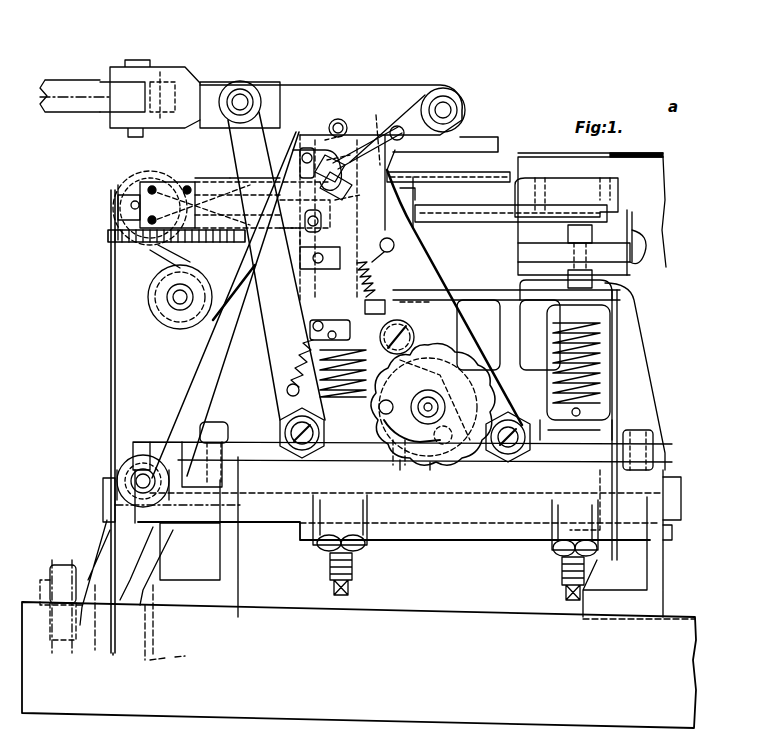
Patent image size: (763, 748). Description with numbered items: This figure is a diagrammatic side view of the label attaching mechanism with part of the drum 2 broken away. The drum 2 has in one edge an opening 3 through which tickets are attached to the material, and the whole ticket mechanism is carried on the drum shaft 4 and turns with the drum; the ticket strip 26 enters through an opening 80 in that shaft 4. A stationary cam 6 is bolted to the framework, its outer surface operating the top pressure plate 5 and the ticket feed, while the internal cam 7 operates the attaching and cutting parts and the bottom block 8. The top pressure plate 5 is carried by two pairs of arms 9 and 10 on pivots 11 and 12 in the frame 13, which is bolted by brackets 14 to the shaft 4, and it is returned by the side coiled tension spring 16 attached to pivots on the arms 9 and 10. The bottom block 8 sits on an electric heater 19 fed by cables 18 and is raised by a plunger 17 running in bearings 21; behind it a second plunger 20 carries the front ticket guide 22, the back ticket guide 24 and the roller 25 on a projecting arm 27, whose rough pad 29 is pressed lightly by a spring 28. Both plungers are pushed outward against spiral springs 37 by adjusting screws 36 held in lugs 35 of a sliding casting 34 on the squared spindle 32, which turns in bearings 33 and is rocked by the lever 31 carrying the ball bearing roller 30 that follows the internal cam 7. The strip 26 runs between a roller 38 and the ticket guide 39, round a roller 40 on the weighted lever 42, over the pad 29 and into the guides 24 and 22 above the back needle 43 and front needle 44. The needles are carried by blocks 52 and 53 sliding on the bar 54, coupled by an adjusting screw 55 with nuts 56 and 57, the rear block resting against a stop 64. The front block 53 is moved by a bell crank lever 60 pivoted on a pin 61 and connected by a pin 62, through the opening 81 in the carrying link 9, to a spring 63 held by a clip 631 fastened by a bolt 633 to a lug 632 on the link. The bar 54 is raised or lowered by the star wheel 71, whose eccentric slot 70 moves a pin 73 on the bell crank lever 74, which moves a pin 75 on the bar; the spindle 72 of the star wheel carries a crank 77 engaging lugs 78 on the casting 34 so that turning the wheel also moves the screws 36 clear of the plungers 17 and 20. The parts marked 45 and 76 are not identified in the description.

The drum 2 is at (638, 201).
The opening 3 is at (590, 199).
The drum shaft 4 is at (424, 590).
The top pressure plate 5 is at (478, 150).
The stationary cam 6 is at (75, 96).
The internal cam 7 is at (104, 598).
The bottom pressure block 8 is at (566, 190).
The arms 9 is at (400, 158).
The arms 10 is at (230, 133).
The pivot 11 is at (512, 418).
The pivot 12 is at (286, 433).
The frame of the machine 13 is at (470, 292).
The brackets 14 is at (240, 552).
The side coiled tension spring 16 is at (388, 272).
The plunger 17 is at (590, 378).
The cables 18 is at (645, 256).
The electric heater 19 is at (580, 240).
The second plunger 20 is at (330, 468).
The bearings 21 is at (568, 361).
The front ticket guide 22 is at (448, 167).
The back ticket guide 24 is at (314, 166).
The roller 25 is at (150, 197).
The ticket strip 26 is at (180, 385).
The projecting arm 27 is at (205, 170).
The spring 28 is at (283, 138).
The rough pad 29 is at (246, 166).
The ball bearing roller 30 is at (62, 607).
The rocking lever 31 is at (138, 555).
The spindle 32 is at (278, 512).
The bearings 33 is at (678, 538).
The sliding casting 34 is at (410, 538).
The lugs 35 is at (455, 525).
The adjusting screws 36 is at (560, 575).
The spiral springs 37 is at (290, 383).
The roller 38 is at (108, 470).
The ticket guide 39 is at (115, 384).
The roller 40 is at (174, 302).
The weighted lever 42 is at (158, 262).
The back needle 43 is at (310, 226).
The front needle 44 is at (407, 192).
The head 45 is at (150, 98).
The rear needle block 52 is at (200, 205).
The front needle block 53 is at (415, 196).
The bar 54 is at (463, 210).
The adjusting screw 55 is at (150, 262).
The adjusting nuts 56 is at (112, 244).
The adjusting nuts 57 is at (220, 252).
The bell crank lever 60 is at (345, 135).
The pin 61 is at (333, 116).
The pin 62 is at (398, 126).
The spring 63 is at (379, 128).
The stop 64 is at (130, 197).
The slot 70 is at (412, 418).
The star wheel 71 is at (444, 397).
The spindle 72 is at (428, 396).
The pin 73 is at (382, 398).
The bell crank lever 74 is at (406, 322).
The pin 75 is at (313, 327).
The dial base 76 is at (418, 455).
The crank portion 77 is at (451, 420).
The lugs 78 is at (430, 470).
The opening 80 is at (177, 634).
The opening 81 is at (425, 95).
The clip 631 is at (345, 150).
The lug 632 is at (335, 165).
The bolt 633 is at (325, 135).